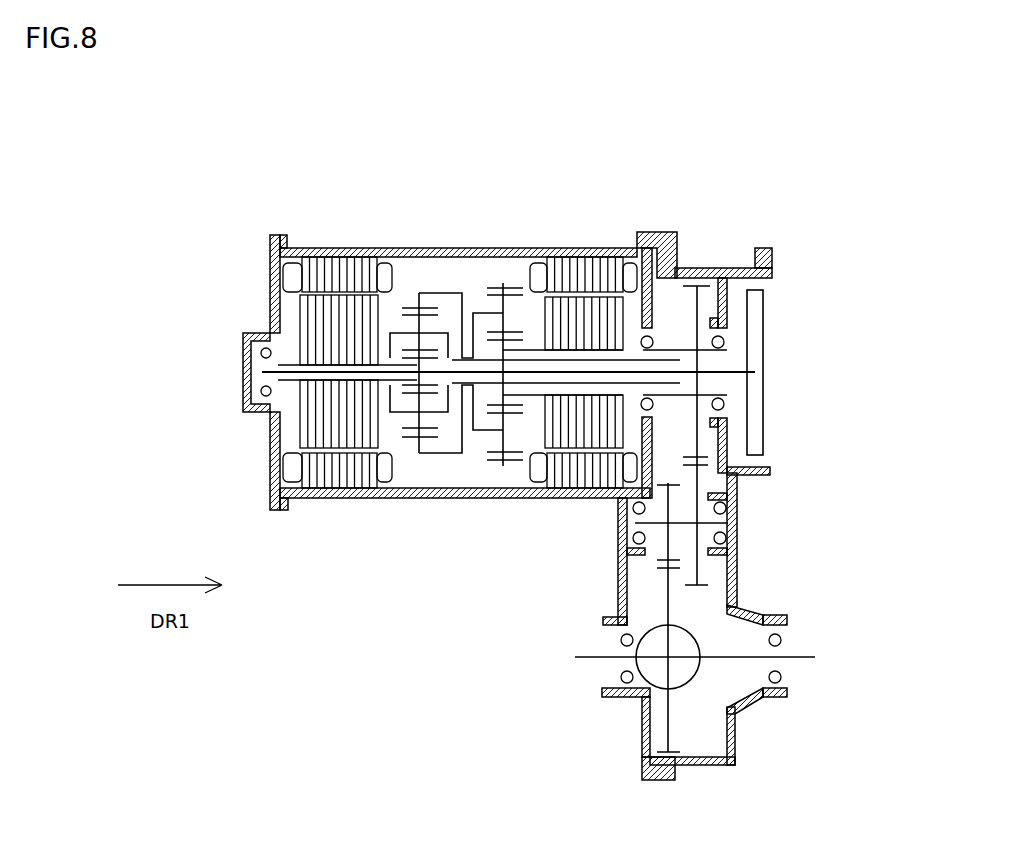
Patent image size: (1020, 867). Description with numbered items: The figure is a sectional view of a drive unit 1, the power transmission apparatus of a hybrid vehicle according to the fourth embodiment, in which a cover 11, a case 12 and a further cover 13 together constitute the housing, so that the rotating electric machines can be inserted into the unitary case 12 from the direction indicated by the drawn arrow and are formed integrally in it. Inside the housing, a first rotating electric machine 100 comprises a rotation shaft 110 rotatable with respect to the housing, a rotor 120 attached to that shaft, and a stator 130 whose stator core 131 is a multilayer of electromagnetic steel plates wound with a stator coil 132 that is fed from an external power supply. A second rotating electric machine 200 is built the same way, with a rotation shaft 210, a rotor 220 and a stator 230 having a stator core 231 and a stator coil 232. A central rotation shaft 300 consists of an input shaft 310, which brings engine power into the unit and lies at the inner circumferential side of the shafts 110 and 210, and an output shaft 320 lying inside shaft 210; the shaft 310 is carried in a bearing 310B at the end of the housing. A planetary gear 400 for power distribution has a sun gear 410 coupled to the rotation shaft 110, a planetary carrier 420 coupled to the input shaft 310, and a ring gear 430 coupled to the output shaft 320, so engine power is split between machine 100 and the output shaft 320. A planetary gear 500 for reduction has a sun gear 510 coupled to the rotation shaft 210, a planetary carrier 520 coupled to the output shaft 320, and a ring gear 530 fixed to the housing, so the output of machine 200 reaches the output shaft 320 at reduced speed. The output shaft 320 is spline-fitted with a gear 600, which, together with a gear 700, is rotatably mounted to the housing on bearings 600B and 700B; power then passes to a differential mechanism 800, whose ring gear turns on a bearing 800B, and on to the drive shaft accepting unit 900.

The drive unit 1 is at (187, 109).
The cover 11 is at (771, 472).
The case 12 is at (340, 494).
The cover 13 is at (270, 452).
The rotating electric machine 100 is at (373, 158).
The rotation shaft 110 is at (307, 318).
The rotor 120 is at (291, 357).
The stator 130 is at (307, 188).
The stator core 131 is at (342, 273).
The stator coil 132 is at (385, 273).
The rotating electric machine 200 is at (692, 157).
The rotation shaft 210 is at (533, 348).
The rotor 220 is at (600, 312).
The stator 230 is at (717, 188).
The stator core 231 is at (622, 275).
The stator coil 232 is at (635, 272).
The rotation shaft 300 is at (840, 345).
The input shaft 310 is at (727, 372).
The output shaft 320 is at (667, 385).
The shaft bearing 310B is at (261, 391).
The planetary gear 400 is at (507, 536).
The sun gear 410 is at (410, 395).
The planetary carrier 420 is at (449, 415).
The ring gear 430 is at (424, 452).
The planetary gear 500 is at (537, 188).
The sun gear 510 is at (493, 332).
The planetary carrier 520 is at (482, 313).
The ring gear 530 is at (505, 288).
The gear 600 is at (697, 297).
The bearing 600B is at (652, 339).
The gear 700 is at (702, 572).
The bearing 700B is at (633, 508).
The differential mechanism 800 is at (683, 682).
The bearing 800B is at (620, 640).
The drive shaft accepting unit 900 is at (617, 658).